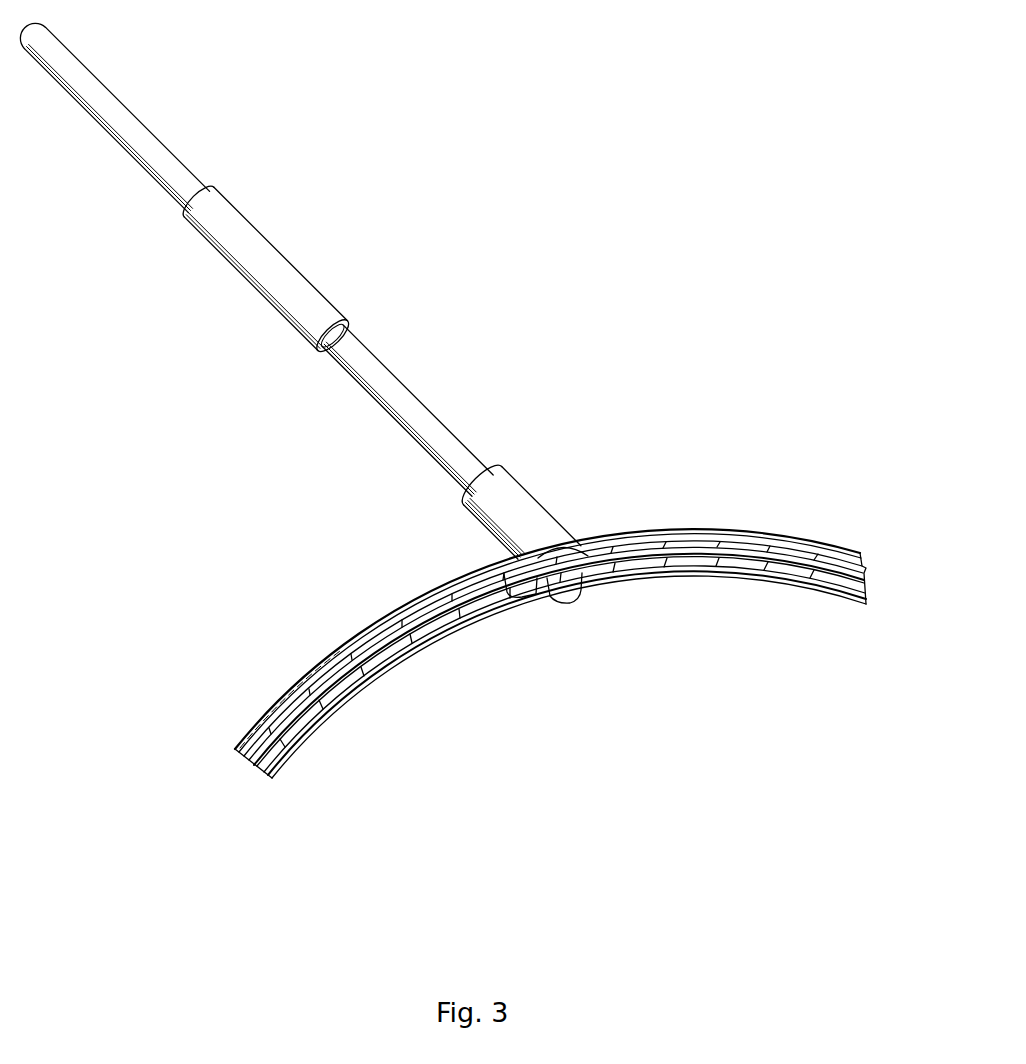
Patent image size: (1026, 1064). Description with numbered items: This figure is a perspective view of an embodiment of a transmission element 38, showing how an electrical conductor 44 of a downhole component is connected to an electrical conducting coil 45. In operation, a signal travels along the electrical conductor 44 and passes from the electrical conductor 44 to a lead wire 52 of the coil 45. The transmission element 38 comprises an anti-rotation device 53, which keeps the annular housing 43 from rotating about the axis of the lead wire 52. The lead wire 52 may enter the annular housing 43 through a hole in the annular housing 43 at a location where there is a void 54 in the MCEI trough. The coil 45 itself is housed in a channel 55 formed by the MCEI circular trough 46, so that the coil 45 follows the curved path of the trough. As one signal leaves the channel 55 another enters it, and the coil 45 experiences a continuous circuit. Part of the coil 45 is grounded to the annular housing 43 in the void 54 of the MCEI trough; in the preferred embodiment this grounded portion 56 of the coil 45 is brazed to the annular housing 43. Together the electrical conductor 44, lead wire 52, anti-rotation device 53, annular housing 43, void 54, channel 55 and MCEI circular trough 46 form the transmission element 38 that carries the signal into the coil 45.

The transmission element 38 is at (460, 712).
The annular housing 43 is at (738, 528).
The electrical conductor 44 is at (232, 134).
The electrical conducting coil 45 is at (812, 563).
The MCEI circular trough 46 is at (383, 645).
The lead wire 52 is at (377, 360).
The anti-rotation device 53 is at (581, 485).
The void 54 is at (615, 587).
The channel 55 is at (867, 577).
The grounded portion 56 is at (497, 556).